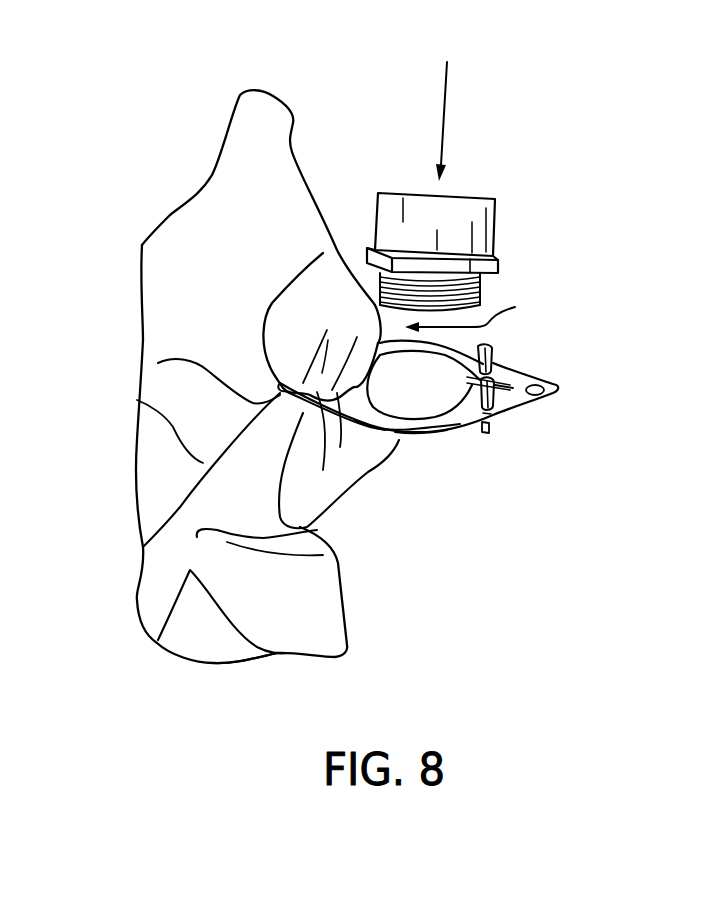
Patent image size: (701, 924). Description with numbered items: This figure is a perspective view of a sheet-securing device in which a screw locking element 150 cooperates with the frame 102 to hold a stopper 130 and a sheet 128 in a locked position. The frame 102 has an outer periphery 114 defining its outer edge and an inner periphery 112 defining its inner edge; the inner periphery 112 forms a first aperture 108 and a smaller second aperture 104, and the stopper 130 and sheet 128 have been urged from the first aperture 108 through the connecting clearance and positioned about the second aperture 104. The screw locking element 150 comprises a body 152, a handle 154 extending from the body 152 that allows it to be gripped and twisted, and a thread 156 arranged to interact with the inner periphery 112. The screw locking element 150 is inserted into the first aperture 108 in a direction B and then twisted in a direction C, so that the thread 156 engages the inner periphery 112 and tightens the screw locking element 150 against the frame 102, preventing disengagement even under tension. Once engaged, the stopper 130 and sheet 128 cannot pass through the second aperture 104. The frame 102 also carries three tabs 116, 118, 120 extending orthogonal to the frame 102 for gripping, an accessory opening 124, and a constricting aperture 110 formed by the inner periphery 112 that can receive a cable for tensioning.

The frame 102 is at (507, 372).
The second aperture 104 is at (348, 447).
The first aperture 108 is at (432, 392).
The constricting aperture 110 is at (476, 430).
The inner periphery 112 is at (425, 432).
The outer periphery 114 is at (379, 430).
The tab 116 is at (490, 360).
The tab 118 is at (495, 403).
The tab 120 is at (493, 433).
The accessory opening 124 is at (546, 391).
The sheet 128 is at (290, 602).
The stopper 130 is at (338, 255).
The screw locking element 150 is at (488, 190).
The body 152 is at (452, 223).
The handle 154 is at (452, 267).
The thread 156 is at (482, 290).
The insertion direction B is at (443, 121).
The twisting direction C is at (515, 307).